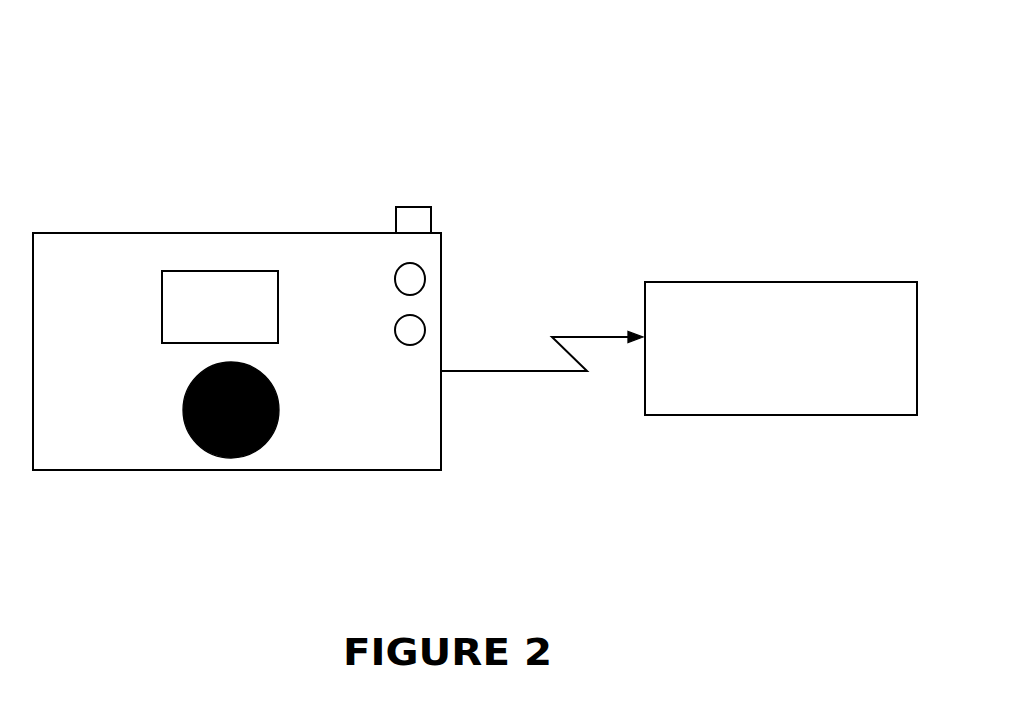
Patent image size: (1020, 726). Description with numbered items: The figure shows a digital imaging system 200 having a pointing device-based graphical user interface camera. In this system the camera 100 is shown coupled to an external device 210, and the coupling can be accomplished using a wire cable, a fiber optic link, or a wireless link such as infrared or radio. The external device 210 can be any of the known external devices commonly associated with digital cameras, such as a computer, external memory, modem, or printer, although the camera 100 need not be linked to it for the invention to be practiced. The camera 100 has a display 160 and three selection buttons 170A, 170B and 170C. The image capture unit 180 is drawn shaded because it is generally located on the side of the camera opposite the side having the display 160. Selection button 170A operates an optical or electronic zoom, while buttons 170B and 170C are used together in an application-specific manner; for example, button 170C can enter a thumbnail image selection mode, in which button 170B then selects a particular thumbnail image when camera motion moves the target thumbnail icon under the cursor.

The digital imaging system 200 is at (722, 58).
The camera 100 is at (120, 430).
The display 160 is at (220, 307).
The image capture unit 180 is at (277, 397).
The selection button 170A is at (474, 198).
The selection button 170B is at (473, 259).
The selection button 170C is at (475, 313).
The external device 210 is at (679, 348).